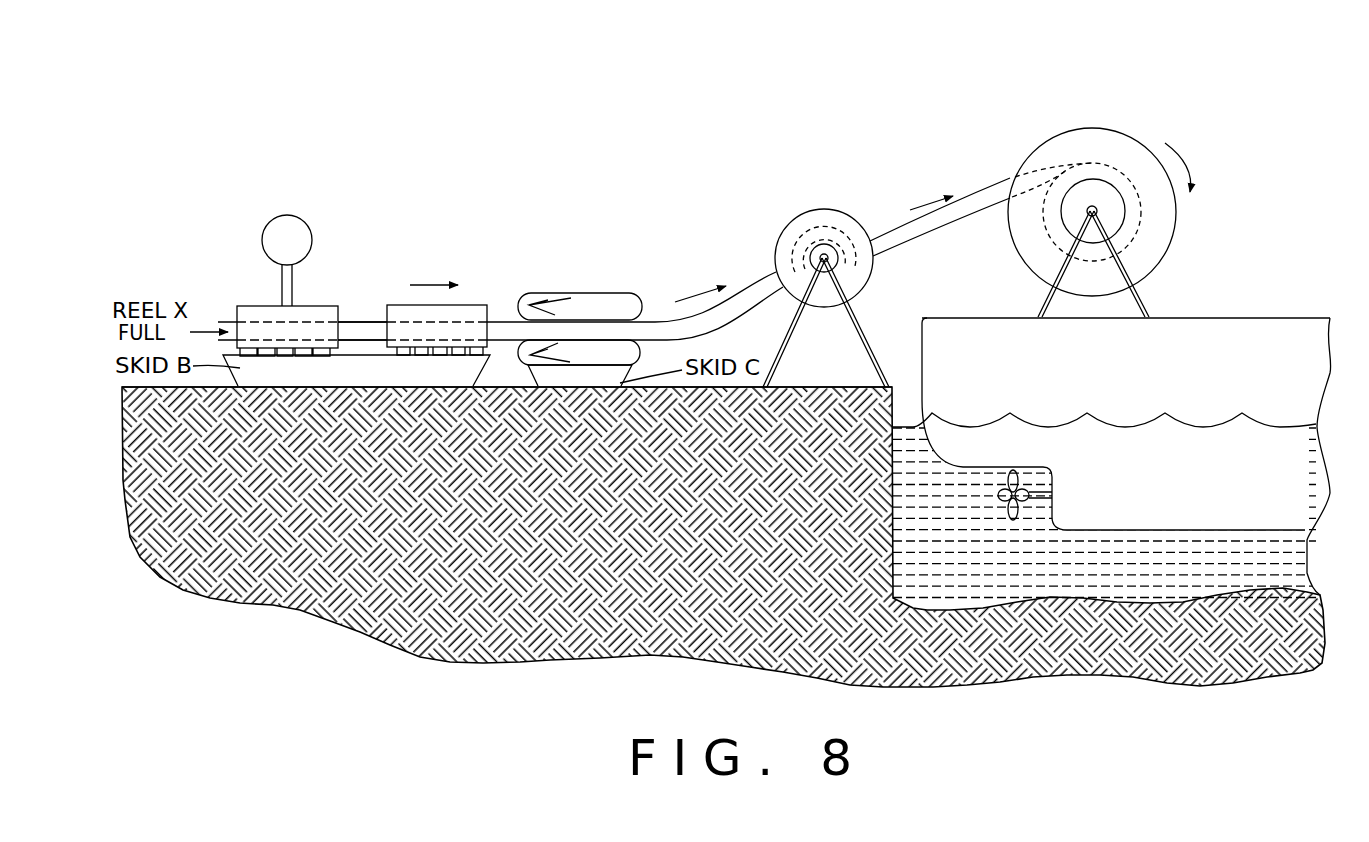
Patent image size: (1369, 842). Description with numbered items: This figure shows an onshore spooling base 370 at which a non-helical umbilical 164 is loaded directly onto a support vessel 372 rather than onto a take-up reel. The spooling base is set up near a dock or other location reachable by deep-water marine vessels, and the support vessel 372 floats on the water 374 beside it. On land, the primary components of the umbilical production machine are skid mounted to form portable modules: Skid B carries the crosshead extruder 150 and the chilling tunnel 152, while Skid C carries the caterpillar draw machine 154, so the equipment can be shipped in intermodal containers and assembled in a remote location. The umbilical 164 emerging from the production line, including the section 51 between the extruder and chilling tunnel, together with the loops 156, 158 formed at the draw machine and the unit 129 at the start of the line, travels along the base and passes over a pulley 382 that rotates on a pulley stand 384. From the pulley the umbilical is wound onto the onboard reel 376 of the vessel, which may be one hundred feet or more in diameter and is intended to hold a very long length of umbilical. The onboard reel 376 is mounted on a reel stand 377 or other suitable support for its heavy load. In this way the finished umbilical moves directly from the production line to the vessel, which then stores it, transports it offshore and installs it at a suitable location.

The onshore spooling base 370 is at (565, 121).
The onboard reel 376 is at (1085, 127).
The non-helical umbilical 164 is at (507, 320).
The pulley 382 is at (812, 210).
The crosshead extruder 150 is at (278, 216).
The pump unit 129 is at (227, 320).
The pipe section 51 is at (360, 320).
The chilling tunnel 152 is at (476, 305).
The caterpillar draw machine 154 is at (568, 234).
The upper loop 156 is at (596, 293).
The lower loop 158 is at (628, 350).
The pulley stand 384 is at (788, 313).
The reel stand 377 is at (1140, 297).
The support vessel 372 is at (1232, 371).
The water 374 is at (1147, 569).